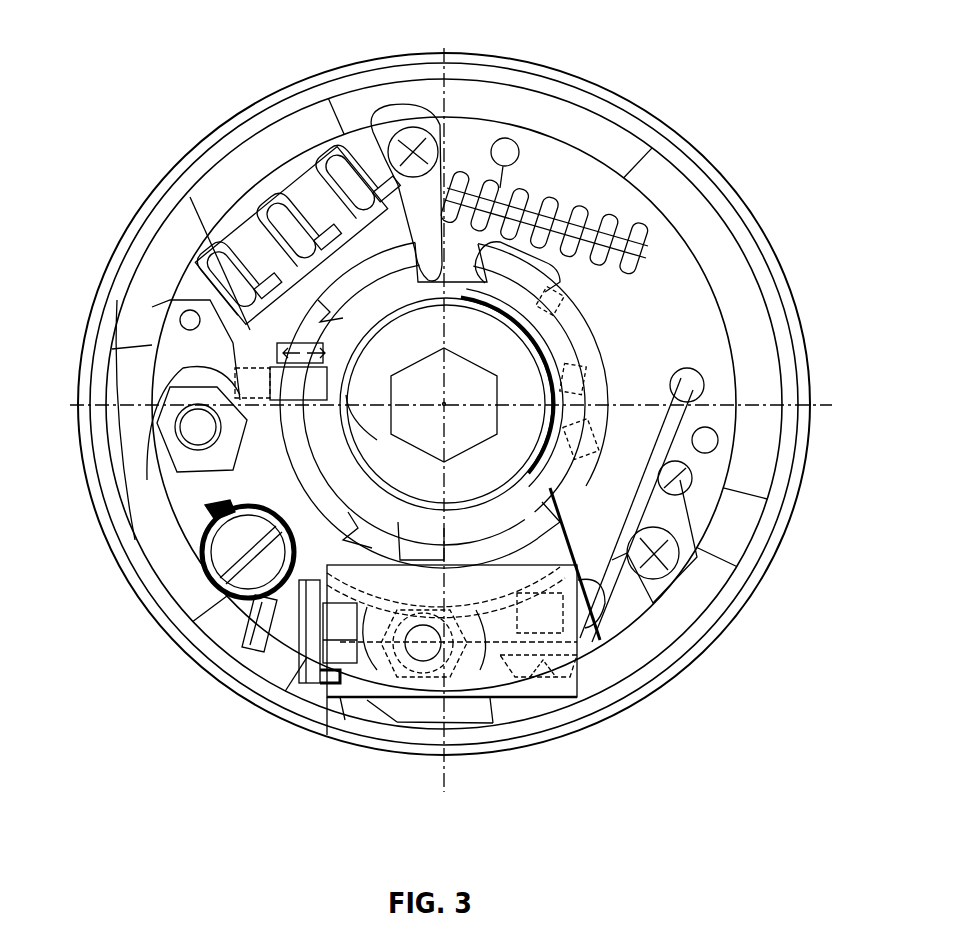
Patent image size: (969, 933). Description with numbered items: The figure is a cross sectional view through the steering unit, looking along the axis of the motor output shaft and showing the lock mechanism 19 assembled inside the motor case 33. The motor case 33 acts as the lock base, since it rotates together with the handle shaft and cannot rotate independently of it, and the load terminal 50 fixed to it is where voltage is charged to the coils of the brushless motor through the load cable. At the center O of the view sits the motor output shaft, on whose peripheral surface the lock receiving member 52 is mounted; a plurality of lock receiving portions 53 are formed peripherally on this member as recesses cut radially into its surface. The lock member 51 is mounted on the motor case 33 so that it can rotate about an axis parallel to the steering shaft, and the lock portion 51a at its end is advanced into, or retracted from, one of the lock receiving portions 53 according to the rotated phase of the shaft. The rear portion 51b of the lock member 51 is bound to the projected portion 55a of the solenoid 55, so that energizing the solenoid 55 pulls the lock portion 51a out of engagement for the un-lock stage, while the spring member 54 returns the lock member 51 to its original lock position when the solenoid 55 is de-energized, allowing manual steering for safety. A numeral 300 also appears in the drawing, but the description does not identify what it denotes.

The lock mechanism 19 is at (222, 462).
The motor case 33 is at (560, 68).
The load terminal 50 is at (385, 133).
The lock member 51 is at (230, 472).
The lock portion 51a is at (446, 404).
The rear portion 51b is at (299, 640).
The lock receiving member 52 is at (590, 346).
The lock receiving portion 53 is at (548, 283).
The spring member 54 is at (210, 575).
The solenoid 55 is at (388, 693).
The projected portion 55a is at (272, 703).
The slot member 300 is at (245, 625).
The center O is at (447, 404).